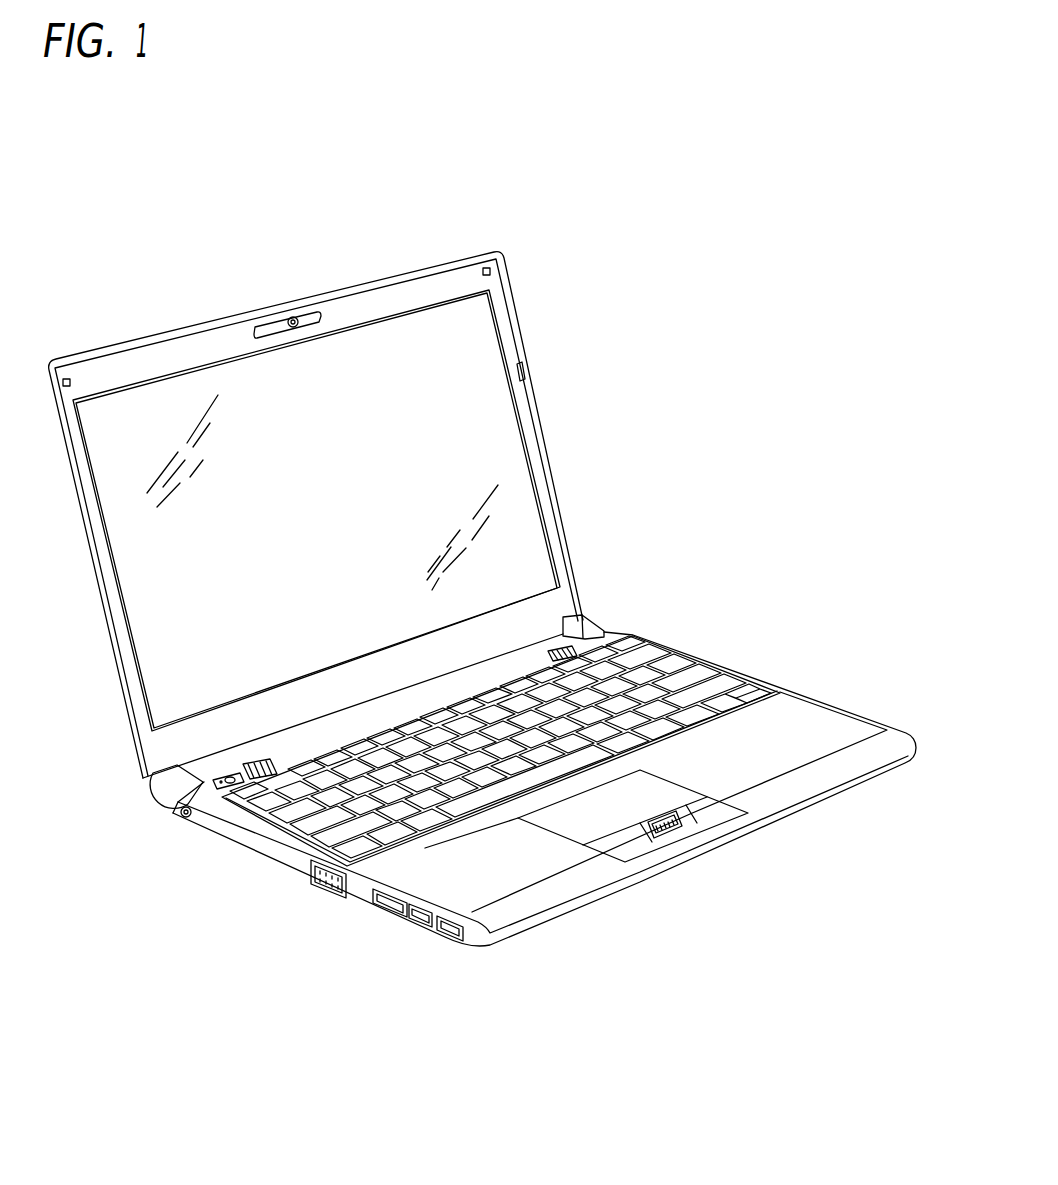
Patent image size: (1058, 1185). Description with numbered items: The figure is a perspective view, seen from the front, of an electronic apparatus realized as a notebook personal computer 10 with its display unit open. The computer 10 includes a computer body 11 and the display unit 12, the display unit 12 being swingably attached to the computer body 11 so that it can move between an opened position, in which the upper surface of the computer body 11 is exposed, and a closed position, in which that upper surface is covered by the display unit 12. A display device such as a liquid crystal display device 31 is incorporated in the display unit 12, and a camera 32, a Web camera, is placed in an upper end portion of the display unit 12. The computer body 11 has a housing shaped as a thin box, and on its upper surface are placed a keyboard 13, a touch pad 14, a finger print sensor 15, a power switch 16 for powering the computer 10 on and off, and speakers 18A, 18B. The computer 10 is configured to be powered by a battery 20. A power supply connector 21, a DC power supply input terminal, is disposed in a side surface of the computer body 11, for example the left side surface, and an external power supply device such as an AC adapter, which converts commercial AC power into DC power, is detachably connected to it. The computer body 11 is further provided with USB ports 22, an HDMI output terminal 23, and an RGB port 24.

The notebook personal computer 10 is at (653, 598).
The computer body 11 is at (745, 674).
The display unit 12 is at (548, 446).
The keyboard 13 is at (665, 670).
The touch pad 14 is at (612, 822).
The finger print sensor 15 is at (676, 836).
The power switch 16 is at (222, 790).
The speaker 18A is at (248, 764).
The speaker 18B is at (554, 648).
The battery 20 is at (371, 720).
The power supply connector 21 is at (184, 820).
The USB ports 22 is at (405, 925).
The HDMI output terminal 23 is at (441, 938).
The RGB port 24 is at (314, 890).
The liquid crystal display device 31 is at (471, 358).
The camera 32 is at (295, 317).